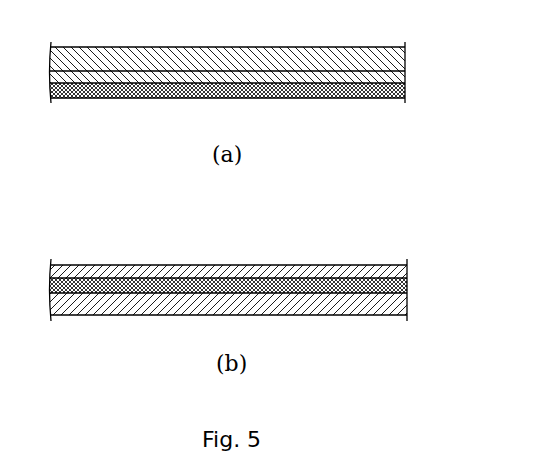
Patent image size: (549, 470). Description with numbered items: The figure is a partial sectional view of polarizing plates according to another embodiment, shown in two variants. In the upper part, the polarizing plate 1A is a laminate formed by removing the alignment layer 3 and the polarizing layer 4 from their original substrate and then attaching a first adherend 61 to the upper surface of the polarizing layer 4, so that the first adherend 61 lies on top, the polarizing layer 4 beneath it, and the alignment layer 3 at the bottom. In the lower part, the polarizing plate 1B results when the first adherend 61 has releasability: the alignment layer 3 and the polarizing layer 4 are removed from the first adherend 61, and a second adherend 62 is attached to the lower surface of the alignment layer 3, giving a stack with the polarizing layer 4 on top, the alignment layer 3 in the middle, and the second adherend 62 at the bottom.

The first adherend 61 is at (405, 55).
The second adherend 62 is at (407, 314).
The polarizing layer 4 is at (405, 73).
The alignment layer 3 is at (405, 90).
The polarizing plate 1A is at (405, 120).
The polarizing plate 1B is at (430, 331).